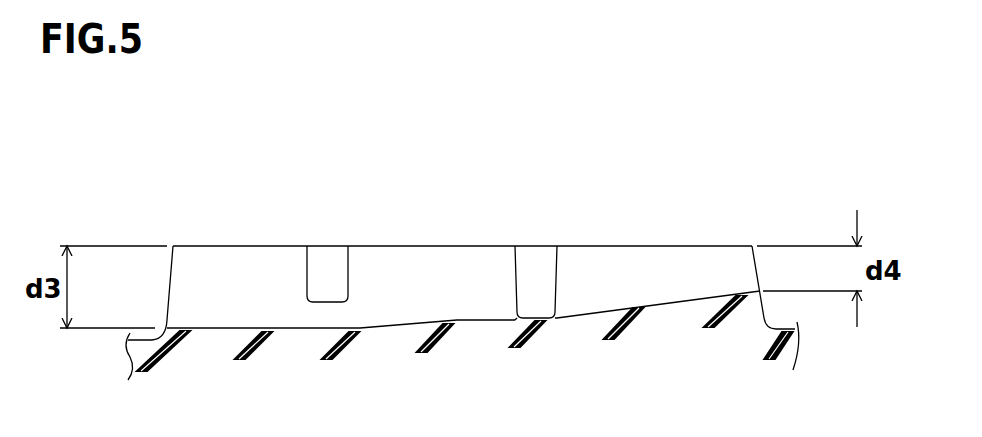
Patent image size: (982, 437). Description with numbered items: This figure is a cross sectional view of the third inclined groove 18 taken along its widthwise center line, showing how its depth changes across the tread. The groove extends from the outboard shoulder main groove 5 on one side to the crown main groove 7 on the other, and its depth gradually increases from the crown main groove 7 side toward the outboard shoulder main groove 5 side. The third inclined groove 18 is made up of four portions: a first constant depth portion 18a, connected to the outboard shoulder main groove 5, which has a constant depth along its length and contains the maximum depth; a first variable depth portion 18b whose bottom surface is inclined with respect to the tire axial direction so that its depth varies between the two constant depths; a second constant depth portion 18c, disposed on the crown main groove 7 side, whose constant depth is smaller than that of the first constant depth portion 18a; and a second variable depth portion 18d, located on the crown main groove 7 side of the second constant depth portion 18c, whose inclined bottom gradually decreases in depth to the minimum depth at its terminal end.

The third inclined groove 18 is at (235, 245).
The first constant depth portion 18a is at (253, 325).
The first variable depth portion 18b is at (408, 318).
The second constant depth portion 18c is at (497, 315).
The second variable depth portion 18d is at (622, 303).
The outboard shoulder main groove 5 is at (145, 318).
The crown main groove 7 is at (782, 313).